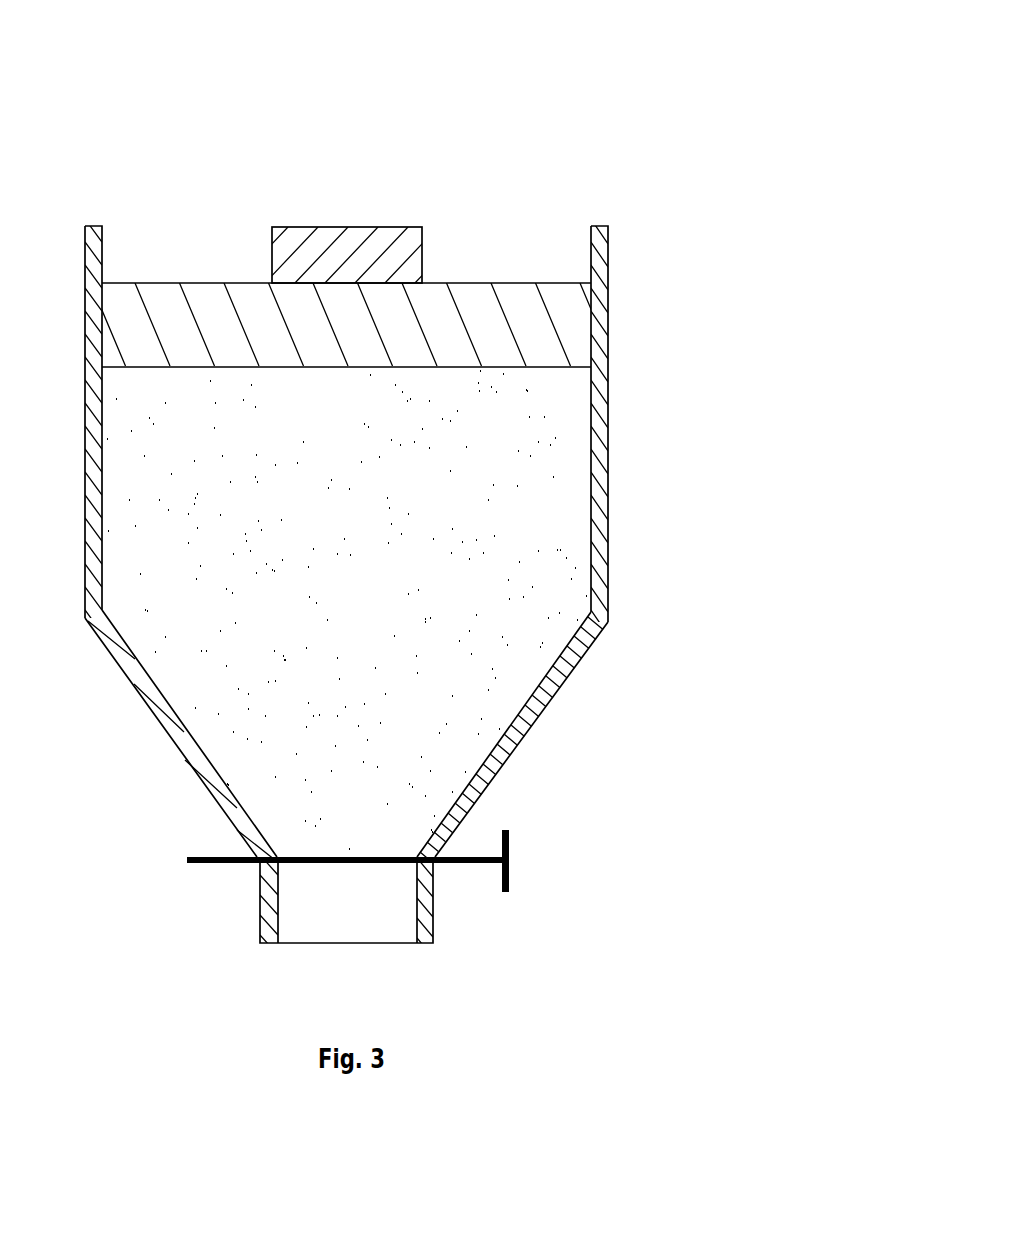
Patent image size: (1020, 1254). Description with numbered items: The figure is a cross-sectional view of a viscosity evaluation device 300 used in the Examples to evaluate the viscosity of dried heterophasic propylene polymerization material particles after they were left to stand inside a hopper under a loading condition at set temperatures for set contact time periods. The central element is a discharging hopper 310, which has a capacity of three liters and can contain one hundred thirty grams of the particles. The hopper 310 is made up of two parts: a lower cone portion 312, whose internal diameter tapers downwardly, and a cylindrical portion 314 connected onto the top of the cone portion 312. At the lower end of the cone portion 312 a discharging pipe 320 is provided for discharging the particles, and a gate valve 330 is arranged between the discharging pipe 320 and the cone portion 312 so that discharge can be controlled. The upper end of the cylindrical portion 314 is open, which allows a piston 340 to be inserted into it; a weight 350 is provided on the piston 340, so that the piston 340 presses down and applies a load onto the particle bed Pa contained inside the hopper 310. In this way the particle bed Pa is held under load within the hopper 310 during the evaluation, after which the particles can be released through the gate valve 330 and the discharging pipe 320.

The viscosity evaluation device 300 is at (679, 91).
The discharging hopper 310 is at (703, 460).
The cone portion 312 is at (557, 691).
The cylindrical portion 314 is at (608, 453).
The discharging pipe 320 is at (434, 922).
The gate valve 330 is at (475, 857).
The piston 340 is at (508, 283).
The weight 350 is at (327, 227).
The particle bed Pa is at (550, 423).